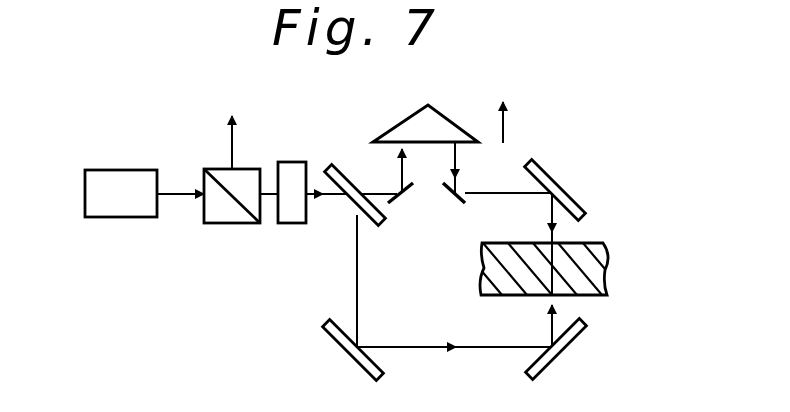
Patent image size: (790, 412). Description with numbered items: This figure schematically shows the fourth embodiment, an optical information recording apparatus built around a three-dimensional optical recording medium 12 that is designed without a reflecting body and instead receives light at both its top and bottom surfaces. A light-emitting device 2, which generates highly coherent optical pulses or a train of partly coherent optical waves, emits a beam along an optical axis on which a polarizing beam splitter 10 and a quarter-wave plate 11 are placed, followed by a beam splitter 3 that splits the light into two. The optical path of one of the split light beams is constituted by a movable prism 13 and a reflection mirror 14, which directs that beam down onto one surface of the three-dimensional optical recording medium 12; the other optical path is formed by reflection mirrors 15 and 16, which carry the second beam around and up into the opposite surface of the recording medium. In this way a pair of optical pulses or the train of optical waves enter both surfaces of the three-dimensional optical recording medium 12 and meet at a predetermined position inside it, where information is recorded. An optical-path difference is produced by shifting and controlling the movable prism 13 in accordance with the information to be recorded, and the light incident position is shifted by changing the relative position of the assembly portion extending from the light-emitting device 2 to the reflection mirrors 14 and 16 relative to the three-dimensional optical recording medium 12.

The light-emitting device 2 is at (124, 170).
The polarizing beam splitter 10 is at (226, 224).
The quarter-wave plate 11 is at (292, 224).
The beam splitter 3 is at (345, 164).
The movable prism 13 is at (446, 120).
The reflection mirror 14 is at (549, 169).
The three-dimensional optical recording medium 12 is at (608, 258).
The reflection mirror 15 is at (336, 343).
The reflection mirror 16 is at (567, 348).